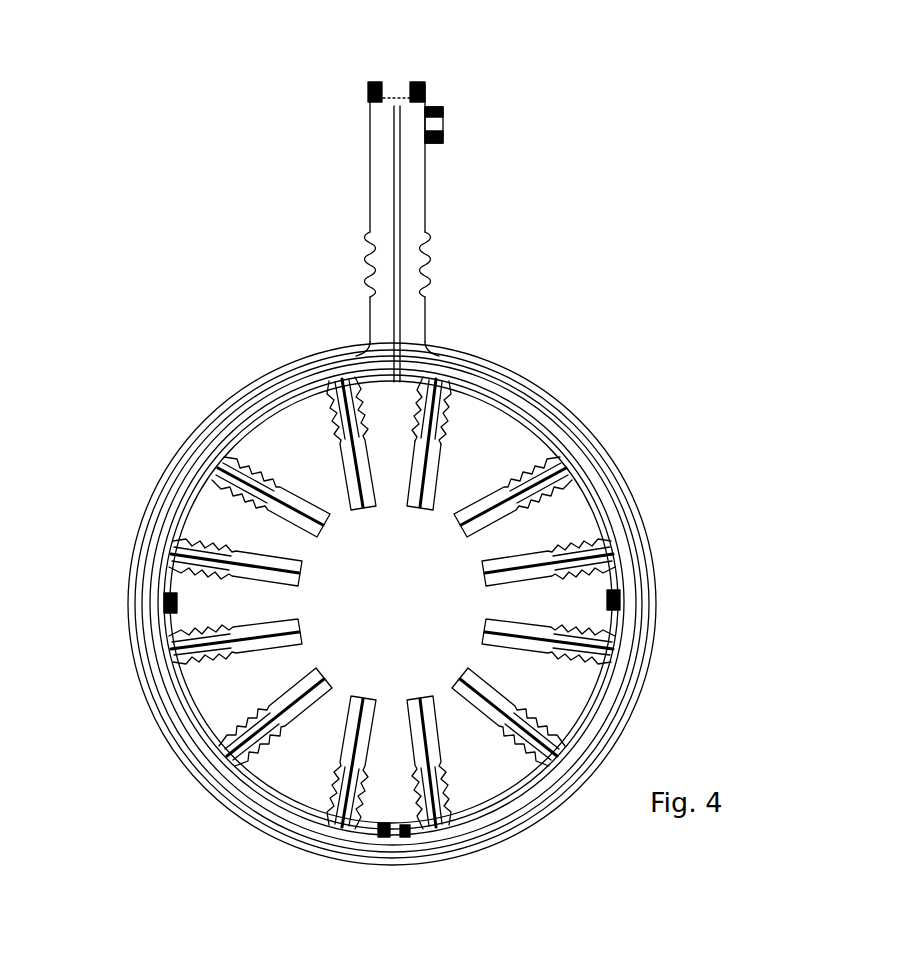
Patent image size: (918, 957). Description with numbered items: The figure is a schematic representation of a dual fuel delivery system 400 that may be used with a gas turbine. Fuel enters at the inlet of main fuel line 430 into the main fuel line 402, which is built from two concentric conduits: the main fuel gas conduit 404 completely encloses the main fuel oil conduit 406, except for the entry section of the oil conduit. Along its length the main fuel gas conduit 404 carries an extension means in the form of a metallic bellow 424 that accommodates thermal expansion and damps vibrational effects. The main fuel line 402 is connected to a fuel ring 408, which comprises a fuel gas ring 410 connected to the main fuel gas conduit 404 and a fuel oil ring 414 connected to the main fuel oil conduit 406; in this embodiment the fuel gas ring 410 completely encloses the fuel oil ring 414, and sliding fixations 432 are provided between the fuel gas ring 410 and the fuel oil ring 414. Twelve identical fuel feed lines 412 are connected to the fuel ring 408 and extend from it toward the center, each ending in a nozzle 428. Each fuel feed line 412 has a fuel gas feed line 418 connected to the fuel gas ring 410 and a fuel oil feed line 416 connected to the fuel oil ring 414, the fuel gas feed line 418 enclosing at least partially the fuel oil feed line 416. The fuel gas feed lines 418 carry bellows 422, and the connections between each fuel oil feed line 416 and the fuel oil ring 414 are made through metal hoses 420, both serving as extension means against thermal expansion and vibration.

The dual fuel delivery system 400 is at (525, 120).
The main fuel line 402 is at (443, 183).
The main fuel gas conduit 404 is at (364, 148).
The main fuel oil conduit 406 is at (398, 215).
The fuel ring 408 is at (215, 398).
The fuel gas ring 410 is at (160, 732).
The fuel feed line 412 is at (535, 530).
The fuel oil ring 414 is at (160, 687).
The fuel oil feed line 416 is at (293, 505).
The fuel gas feed line 418 is at (273, 503).
The metal hose 420 is at (453, 392).
The bellow 422 is at (452, 427).
The bellow 424 is at (372, 255).
The nozzle 428 is at (482, 578).
The inlet of main fuel line 430 is at (405, 97).
The sliding fixation 432 is at (620, 590).